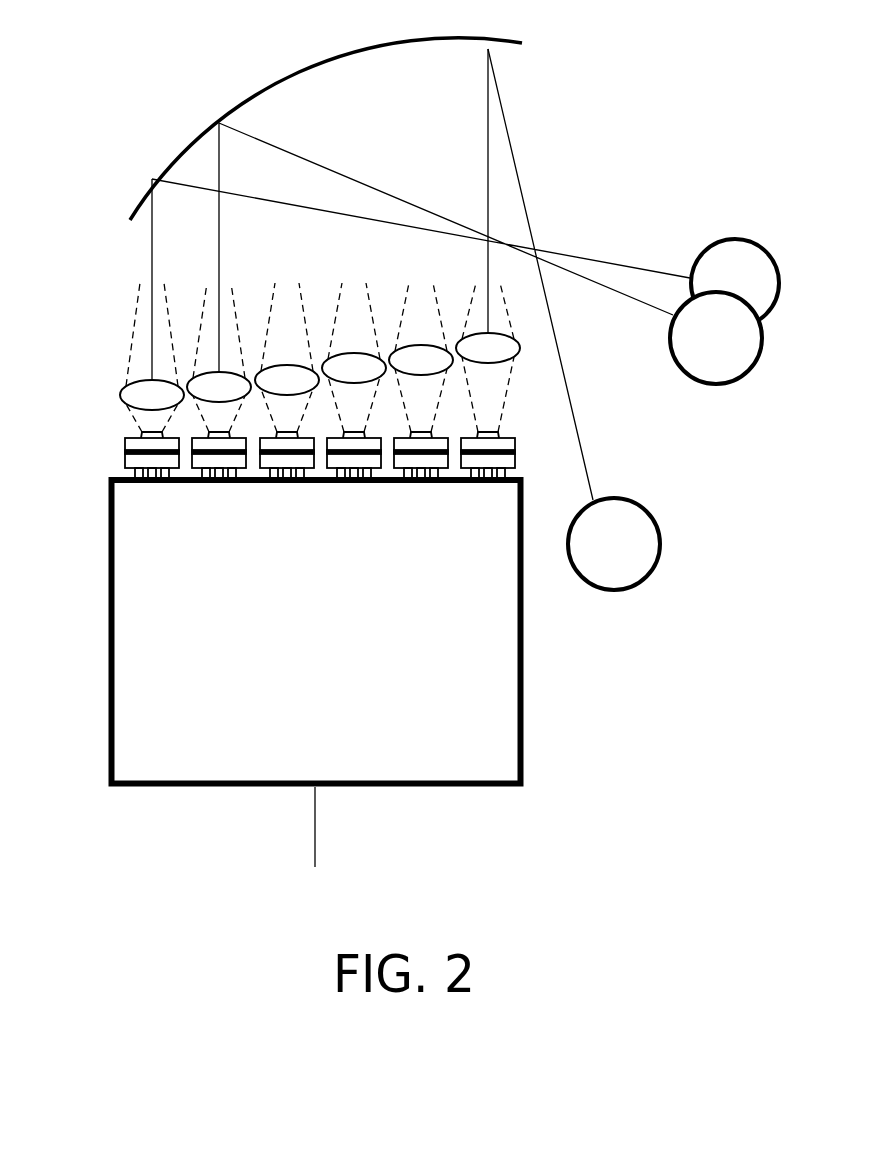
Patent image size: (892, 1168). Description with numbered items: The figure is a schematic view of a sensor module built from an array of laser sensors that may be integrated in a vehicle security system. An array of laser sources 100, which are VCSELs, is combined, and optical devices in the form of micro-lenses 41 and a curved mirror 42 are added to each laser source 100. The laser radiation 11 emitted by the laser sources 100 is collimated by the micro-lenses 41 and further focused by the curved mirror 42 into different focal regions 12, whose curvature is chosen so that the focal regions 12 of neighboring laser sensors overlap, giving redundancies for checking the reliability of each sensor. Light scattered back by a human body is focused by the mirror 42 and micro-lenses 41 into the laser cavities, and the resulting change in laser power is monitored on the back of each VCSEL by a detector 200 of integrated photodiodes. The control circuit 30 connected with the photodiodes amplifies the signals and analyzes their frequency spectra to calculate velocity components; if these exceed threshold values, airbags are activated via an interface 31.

The laser radiation 11 is at (219, 251).
The focal regions 12 is at (733, 262).
The control circuit 30 is at (334, 636).
The interface 31 is at (335, 830).
The micro-lenses 41 is at (135, 395).
The curved mirror 42 is at (312, 78).
The laser sources 100 is at (135, 442).
The detector 200 is at (135, 462).